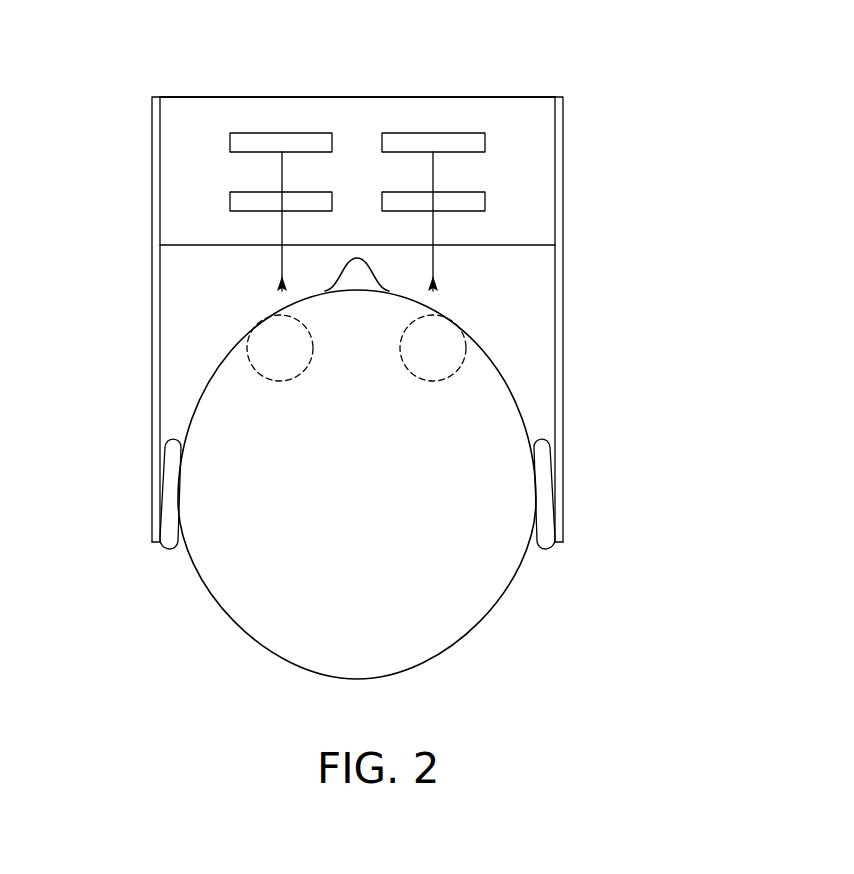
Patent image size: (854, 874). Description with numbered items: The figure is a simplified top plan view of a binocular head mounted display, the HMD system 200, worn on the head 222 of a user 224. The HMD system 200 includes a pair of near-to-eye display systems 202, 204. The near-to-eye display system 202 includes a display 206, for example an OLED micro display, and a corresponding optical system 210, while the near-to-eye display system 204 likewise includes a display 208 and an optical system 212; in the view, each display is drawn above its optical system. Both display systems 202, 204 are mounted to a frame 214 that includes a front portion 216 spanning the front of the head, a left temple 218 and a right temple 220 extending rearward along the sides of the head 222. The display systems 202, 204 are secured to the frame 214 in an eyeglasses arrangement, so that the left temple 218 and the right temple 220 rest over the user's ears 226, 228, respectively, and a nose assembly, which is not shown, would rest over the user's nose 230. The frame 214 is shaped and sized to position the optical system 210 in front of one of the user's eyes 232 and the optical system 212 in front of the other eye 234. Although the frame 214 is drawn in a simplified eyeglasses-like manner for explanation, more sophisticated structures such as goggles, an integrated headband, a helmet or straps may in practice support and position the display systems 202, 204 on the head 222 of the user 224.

The HMD system 200 is at (647, 77).
The near-to-eye display system 202 is at (216, 157).
The near-to-eye display system 204 is at (496, 160).
The display 206 is at (305, 133).
The display 208 is at (430, 133).
The optical system 210 is at (230, 203).
The optical system 212 is at (485, 203).
The frame 214 is at (153, 97).
The front portion 216 is at (244, 110).
The left temple 218 is at (152, 428).
The right temple 220 is at (563, 418).
The head 222 is at (420, 665).
The user 224 is at (529, 626).
The ear 226 is at (168, 548).
The ear 228 is at (547, 548).
The nose 230 is at (376, 270).
The eye 232 is at (247, 355).
The eye 234 is at (465, 363).